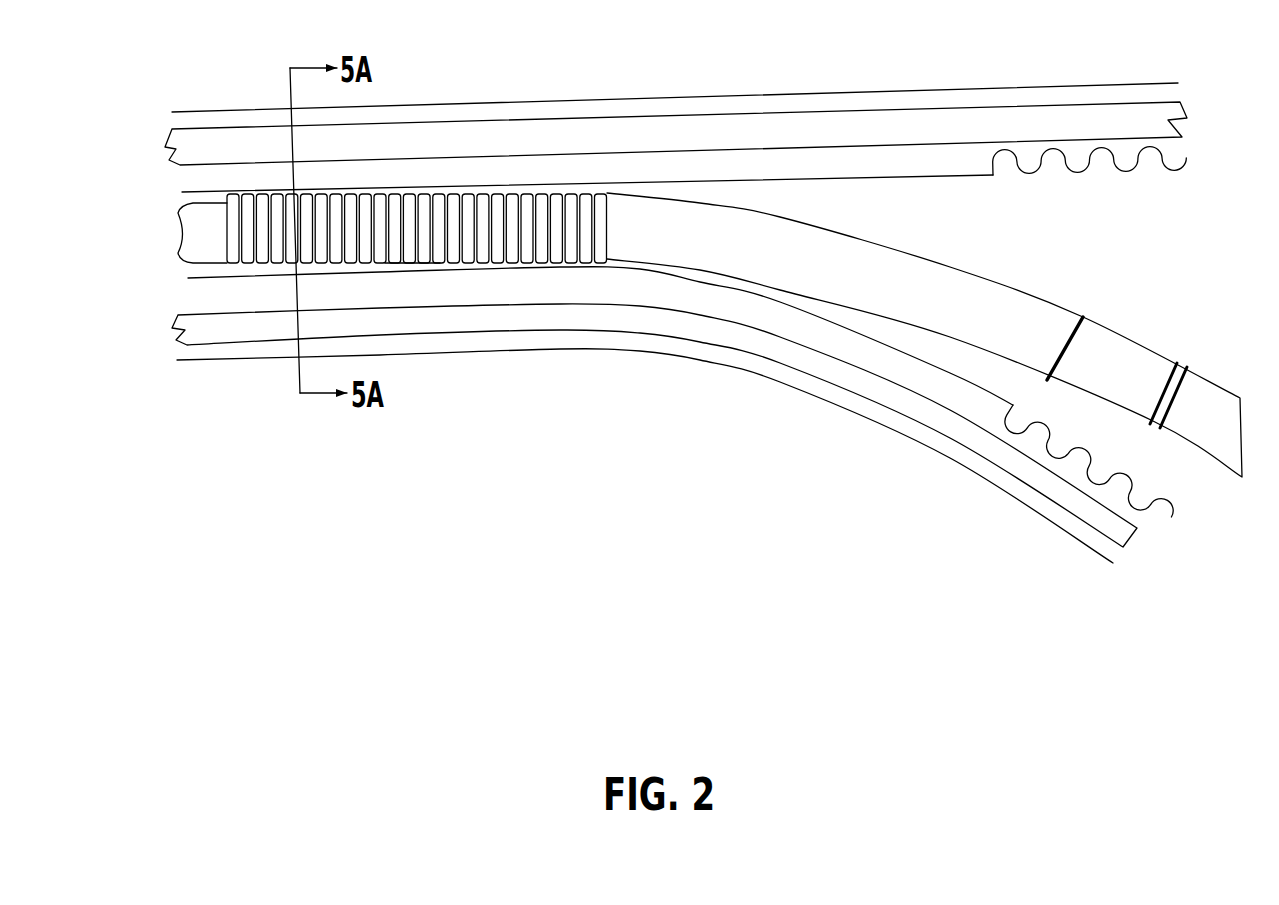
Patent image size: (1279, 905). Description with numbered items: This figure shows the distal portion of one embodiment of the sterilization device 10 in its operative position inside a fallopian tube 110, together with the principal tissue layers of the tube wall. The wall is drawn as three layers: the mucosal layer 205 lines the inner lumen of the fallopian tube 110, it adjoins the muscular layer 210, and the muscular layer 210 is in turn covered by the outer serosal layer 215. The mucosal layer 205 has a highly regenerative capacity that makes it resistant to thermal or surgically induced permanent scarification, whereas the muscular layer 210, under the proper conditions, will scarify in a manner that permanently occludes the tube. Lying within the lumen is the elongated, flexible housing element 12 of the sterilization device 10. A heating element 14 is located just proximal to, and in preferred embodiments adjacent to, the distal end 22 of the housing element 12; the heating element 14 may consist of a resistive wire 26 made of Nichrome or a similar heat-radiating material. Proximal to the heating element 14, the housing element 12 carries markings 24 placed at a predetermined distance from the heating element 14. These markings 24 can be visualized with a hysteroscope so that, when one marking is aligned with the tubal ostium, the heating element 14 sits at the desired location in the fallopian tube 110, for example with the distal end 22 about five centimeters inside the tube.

The sterilization device 10 is at (682, 264).
The housing element 12 is at (1005, 282).
The heating element 14 is at (423, 188).
The distal end 22 is at (185, 255).
The markings 24 is at (1083, 317).
The resistive wire 26 is at (408, 263).
The fallopian tube 110 is at (615, 83).
The mucosal layer 205 is at (990, 405).
The muscular layer 210 is at (895, 393).
The serosal layer 215 is at (758, 378).